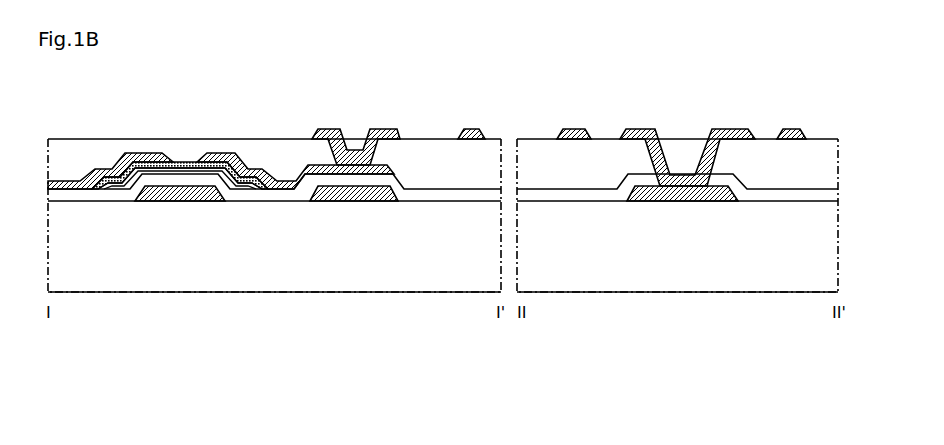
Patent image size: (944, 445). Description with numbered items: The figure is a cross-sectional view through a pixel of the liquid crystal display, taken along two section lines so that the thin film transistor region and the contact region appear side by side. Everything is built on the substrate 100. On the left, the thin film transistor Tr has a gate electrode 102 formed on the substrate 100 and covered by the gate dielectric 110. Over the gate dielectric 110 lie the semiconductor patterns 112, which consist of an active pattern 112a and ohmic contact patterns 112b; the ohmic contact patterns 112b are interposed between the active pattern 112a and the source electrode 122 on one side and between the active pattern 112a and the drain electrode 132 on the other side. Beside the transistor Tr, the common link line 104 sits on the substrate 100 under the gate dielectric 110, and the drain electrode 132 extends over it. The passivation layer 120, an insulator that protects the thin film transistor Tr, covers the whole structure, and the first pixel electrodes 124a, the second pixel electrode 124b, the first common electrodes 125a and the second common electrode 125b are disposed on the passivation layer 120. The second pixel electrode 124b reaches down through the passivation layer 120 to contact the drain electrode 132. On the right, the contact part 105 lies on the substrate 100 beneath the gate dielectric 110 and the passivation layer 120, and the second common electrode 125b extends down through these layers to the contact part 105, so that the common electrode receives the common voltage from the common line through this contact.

The substrate 100 is at (833, 243).
The gate dielectric 110 is at (833, 193).
The passivation layer 120 is at (833, 161).
The gate electrode 102 is at (203, 201).
The semiconductor patterns 112 is at (175, 271).
The active pattern 112a is at (168, 187).
The ohmic contact patterns 112b is at (118, 187).
The source electrode 122 is at (105, 187).
The drain electrode 132 is at (252, 172).
The common link line 104 is at (356, 201).
The contact part 105 is at (683, 192).
The first pixel electrodes 124a is at (575, 129).
The second pixel electrode 124b is at (383, 129).
The first common electrodes 125a is at (472, 129).
The second common electrode 125b is at (641, 129).
The thin film transistor Tr is at (218, 285).